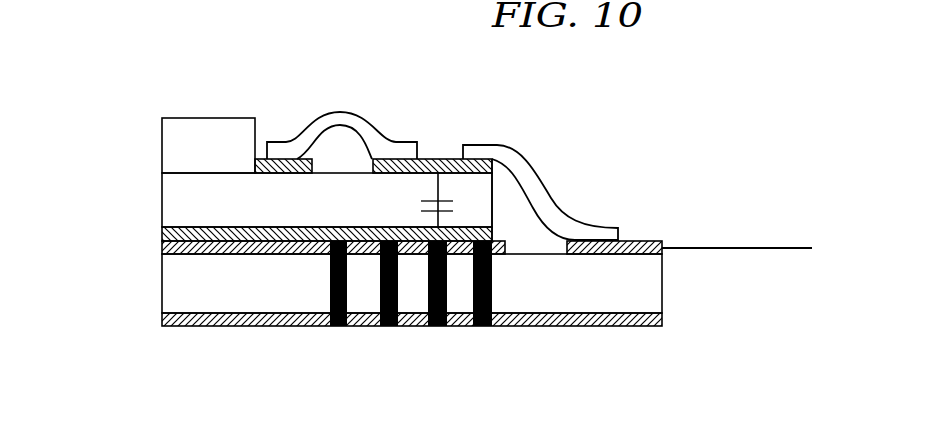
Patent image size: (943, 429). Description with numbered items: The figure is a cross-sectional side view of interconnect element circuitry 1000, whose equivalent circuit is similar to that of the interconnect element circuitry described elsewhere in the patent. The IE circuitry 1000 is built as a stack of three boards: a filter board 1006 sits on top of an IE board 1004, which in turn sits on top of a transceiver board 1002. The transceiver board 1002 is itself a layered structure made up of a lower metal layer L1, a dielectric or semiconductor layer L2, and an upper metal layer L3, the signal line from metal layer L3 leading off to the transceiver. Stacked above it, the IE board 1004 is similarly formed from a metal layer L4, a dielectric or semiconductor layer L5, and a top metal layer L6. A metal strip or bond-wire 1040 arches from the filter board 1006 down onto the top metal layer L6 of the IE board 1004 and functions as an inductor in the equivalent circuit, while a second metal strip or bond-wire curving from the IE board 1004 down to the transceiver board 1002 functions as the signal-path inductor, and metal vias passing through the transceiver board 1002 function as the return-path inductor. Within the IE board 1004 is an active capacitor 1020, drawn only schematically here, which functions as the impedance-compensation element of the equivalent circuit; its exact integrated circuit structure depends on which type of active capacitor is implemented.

The interconnect element circuitry 1000 is at (588, 67).
The transceiver board 1002 is at (419, 283).
The IE board 1004 is at (409, 187).
The filter board 1006 is at (206, 118).
The active capacitor 1020 is at (461, 224).
The metal strip or bond-wire 1040 is at (366, 114).
The metal layer L1 is at (162, 319).
The dielectric or semiconductor layer L2 is at (162, 282).
The metal layer L3 is at (162, 247).
The metal layer L4 is at (162, 234).
The dielectric or semiconductor layer L5 is at (162, 187).
The metal layer L6 is at (372, 160).